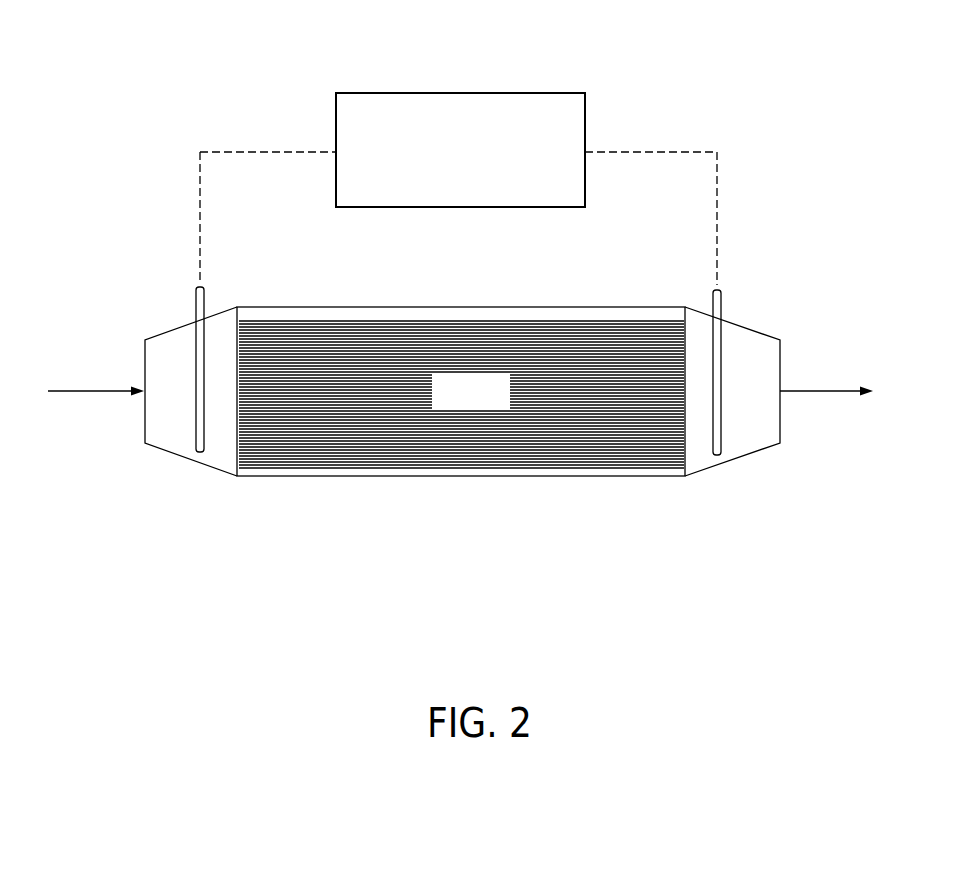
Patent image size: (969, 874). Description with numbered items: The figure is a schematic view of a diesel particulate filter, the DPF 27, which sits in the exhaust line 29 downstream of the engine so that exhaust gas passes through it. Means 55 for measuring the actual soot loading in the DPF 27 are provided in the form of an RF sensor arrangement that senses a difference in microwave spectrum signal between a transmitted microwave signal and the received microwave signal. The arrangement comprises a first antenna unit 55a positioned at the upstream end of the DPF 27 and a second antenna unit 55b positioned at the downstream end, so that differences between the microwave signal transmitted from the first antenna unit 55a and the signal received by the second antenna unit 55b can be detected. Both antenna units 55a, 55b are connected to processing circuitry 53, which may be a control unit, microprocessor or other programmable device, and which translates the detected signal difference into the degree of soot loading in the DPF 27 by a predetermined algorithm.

The DPF 27 is at (508, 483).
The exhaust line 29 is at (98, 392).
The processing circuitry 53 is at (520, 93).
The means for measuring actual soot loading 55 is at (471, 341).
The first antenna unit 55a is at (196, 315).
The second antenna unit 55b is at (722, 340).